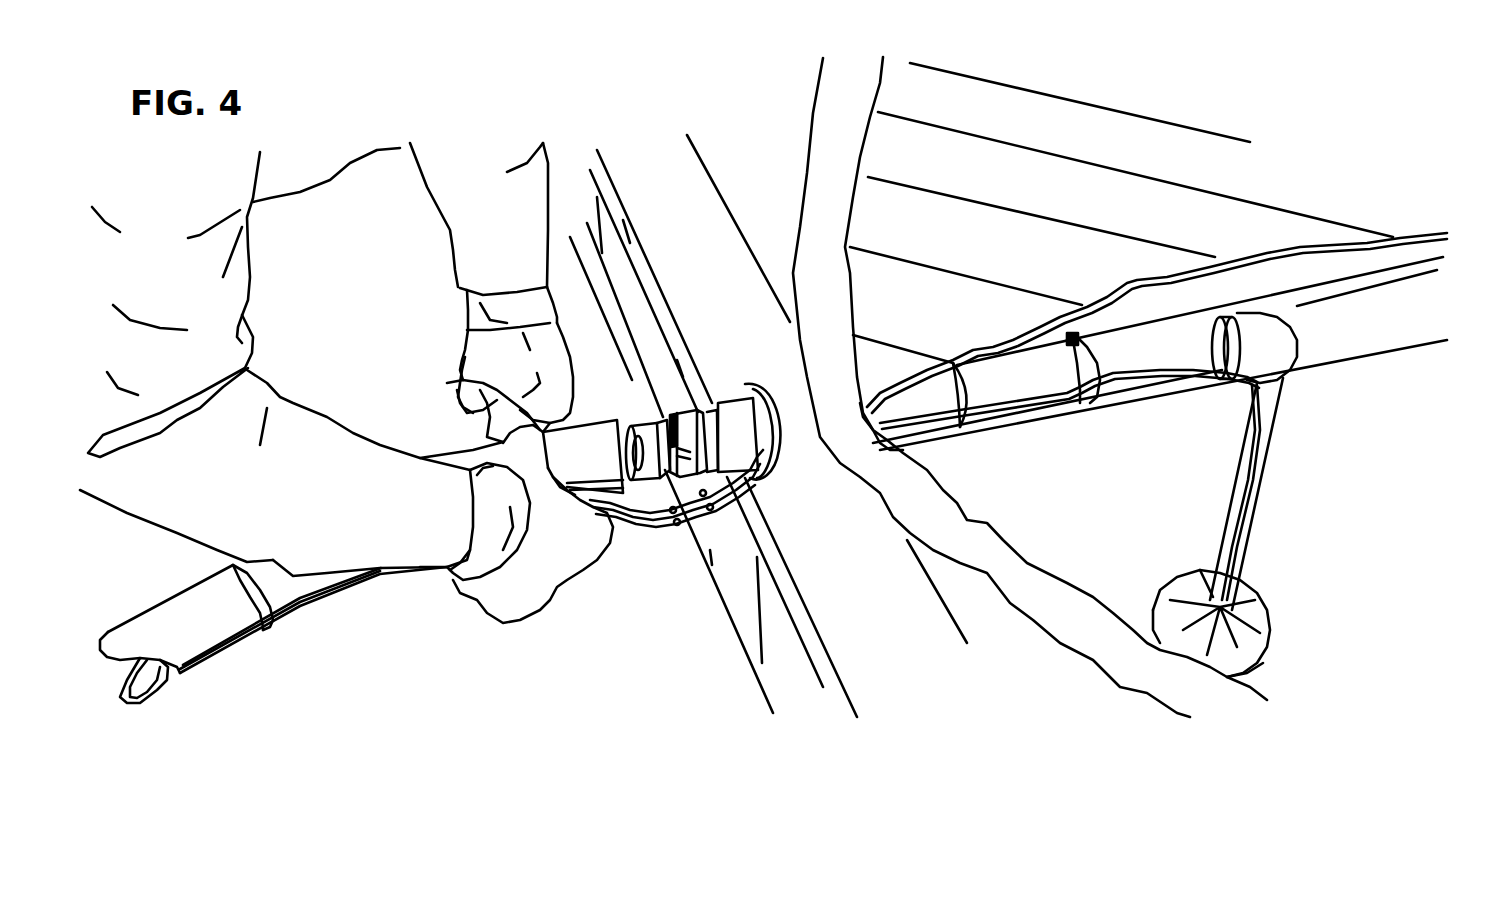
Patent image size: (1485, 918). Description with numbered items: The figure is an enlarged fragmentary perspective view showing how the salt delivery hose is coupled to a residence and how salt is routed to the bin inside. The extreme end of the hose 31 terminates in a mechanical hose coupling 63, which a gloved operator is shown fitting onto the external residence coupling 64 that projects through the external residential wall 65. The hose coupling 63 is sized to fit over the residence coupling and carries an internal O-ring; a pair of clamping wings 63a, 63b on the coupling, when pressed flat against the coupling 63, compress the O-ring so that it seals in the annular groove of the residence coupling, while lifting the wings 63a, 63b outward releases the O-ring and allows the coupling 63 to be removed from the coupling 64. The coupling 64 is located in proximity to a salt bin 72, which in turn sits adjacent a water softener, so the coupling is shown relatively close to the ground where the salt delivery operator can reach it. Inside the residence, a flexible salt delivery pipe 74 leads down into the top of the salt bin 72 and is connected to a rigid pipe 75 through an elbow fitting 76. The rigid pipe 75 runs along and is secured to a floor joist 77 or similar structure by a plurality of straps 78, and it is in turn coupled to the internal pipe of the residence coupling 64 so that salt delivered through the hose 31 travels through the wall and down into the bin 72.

The hose 31 is at (177, 602).
The hose coupling 63 is at (597, 417).
The clamping wing 63a is at (470, 384).
The clamping wing 63b is at (597, 503).
The residence coupling 64 is at (718, 403).
The residential wall 65 is at (667, 173).
The salt bin 72 is at (1253, 677).
The flexible salt delivery pipe 74 is at (1275, 427).
The rigid pipe 75 is at (1172, 340).
The elbow fitting 76 is at (1293, 340).
The floor joist 77 is at (1413, 297).
The straps 78 is at (1082, 340).